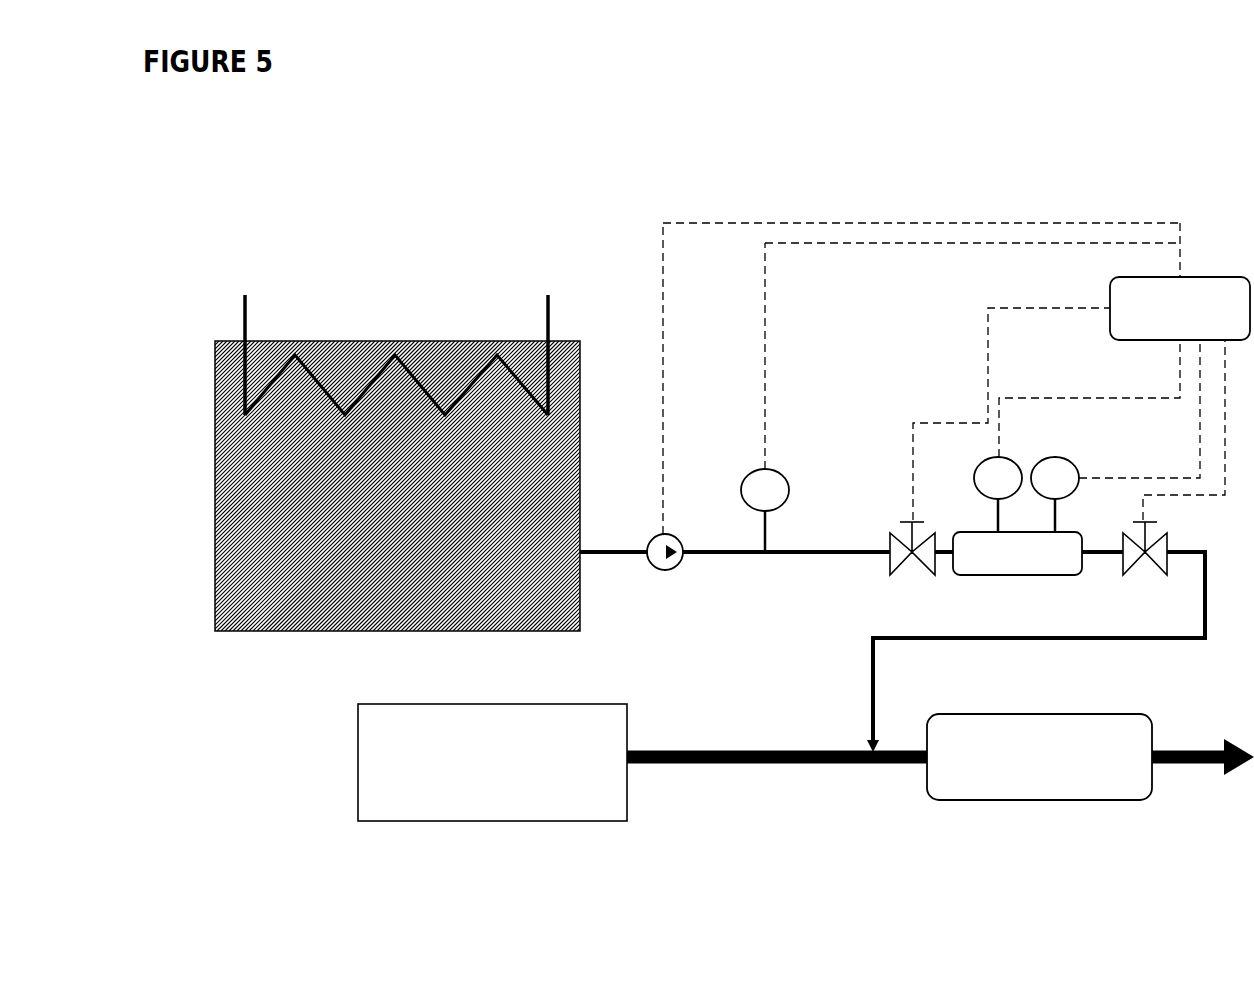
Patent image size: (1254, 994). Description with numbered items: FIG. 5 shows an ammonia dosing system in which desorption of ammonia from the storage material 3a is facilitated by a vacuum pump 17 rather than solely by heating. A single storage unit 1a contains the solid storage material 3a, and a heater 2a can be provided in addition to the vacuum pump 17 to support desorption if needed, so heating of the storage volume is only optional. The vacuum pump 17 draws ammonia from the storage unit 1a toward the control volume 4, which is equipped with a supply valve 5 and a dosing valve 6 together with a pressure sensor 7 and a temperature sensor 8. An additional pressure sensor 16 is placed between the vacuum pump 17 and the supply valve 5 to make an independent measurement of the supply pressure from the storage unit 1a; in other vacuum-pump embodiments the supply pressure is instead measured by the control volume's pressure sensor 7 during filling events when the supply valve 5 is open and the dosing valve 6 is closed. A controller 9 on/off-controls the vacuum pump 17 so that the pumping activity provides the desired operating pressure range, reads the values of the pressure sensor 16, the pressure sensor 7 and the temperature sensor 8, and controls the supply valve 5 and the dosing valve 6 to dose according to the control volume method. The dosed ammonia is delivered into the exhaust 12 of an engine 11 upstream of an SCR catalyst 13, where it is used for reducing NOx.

The storage unit 1a is at (436, 332).
The heater 2a is at (256, 315).
The storage material 3a is at (433, 486).
The control volume 4 is at (1017, 553).
The supply valve 5 is at (1000, 453).
The dosing valve 6 is at (1173, 469).
The pressure sensor 7 is at (1077, 436).
The temperature sensor 8 is at (1115, 436).
The controller 9 is at (1180, 308).
The engine 11 is at (492, 762).
The exhaust 12 is at (777, 741).
The SCR catalyst 13 is at (1090, 757).
The pressure sensor 16 is at (960, 387).
The vacuum pump 17 is at (909, 411).